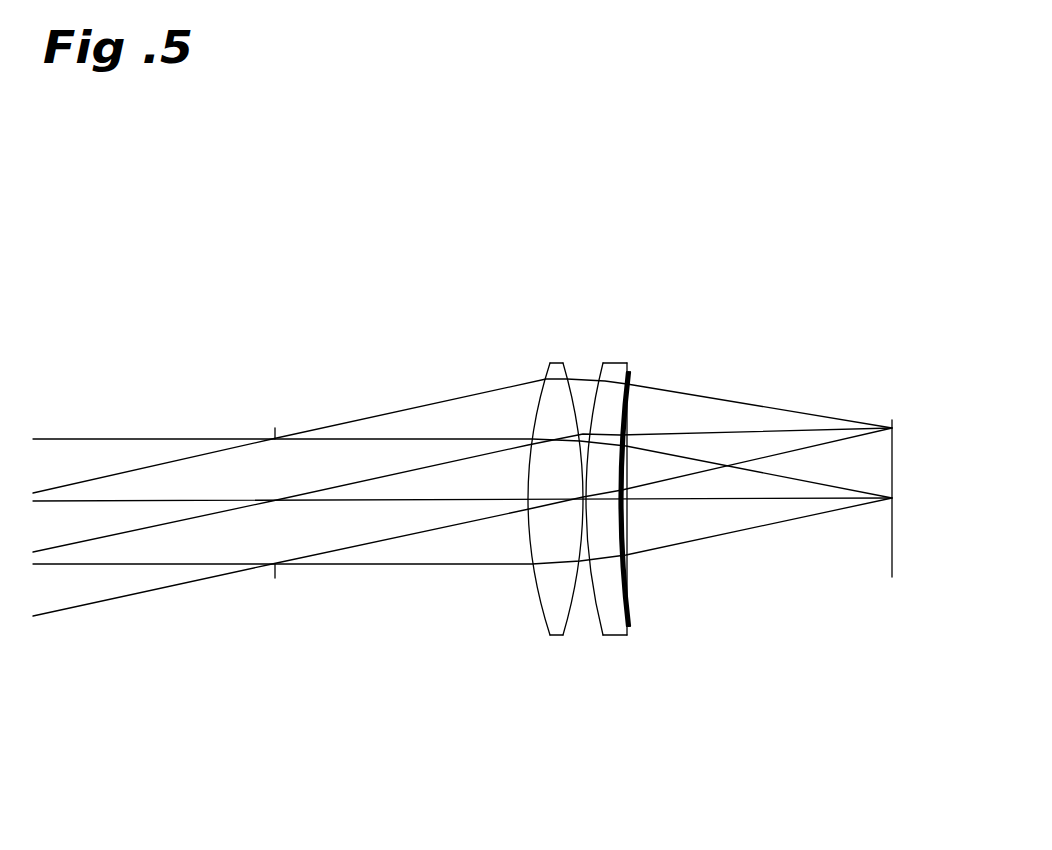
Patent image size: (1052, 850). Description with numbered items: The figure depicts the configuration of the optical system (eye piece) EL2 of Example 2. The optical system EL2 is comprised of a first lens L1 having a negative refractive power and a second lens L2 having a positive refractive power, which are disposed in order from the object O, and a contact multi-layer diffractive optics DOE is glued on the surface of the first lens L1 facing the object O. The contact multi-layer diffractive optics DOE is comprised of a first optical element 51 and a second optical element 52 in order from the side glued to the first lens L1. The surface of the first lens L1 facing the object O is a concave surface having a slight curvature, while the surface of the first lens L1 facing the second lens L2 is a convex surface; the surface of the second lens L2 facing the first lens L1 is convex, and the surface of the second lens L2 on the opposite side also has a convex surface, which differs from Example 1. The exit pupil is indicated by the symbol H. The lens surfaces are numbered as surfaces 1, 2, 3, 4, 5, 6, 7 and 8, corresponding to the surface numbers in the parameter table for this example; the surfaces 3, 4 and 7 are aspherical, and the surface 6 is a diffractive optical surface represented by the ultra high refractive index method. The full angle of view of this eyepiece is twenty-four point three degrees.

The optical system (eye piece) EL2 is at (392, 181).
The exit pupil H is at (275, 437).
The surface 1 is at (276, 580).
The second lens L2 is at (535, 502).
The surface 2 is at (543, 617).
The surface 3 is at (573, 617).
The first lens L1 is at (622, 486).
The surface 4 is at (600, 615).
The surface 5 is at (615, 613).
The contact multi-layer diffractive optics DOE is at (692, 224).
The first optical element 51 is at (649, 511).
The second optical element 52 is at (658, 484).
The surface 6 is at (631, 613).
The surface 7 is at (658, 726).
The surface 8 is at (630, 608).
The object O is at (893, 445).